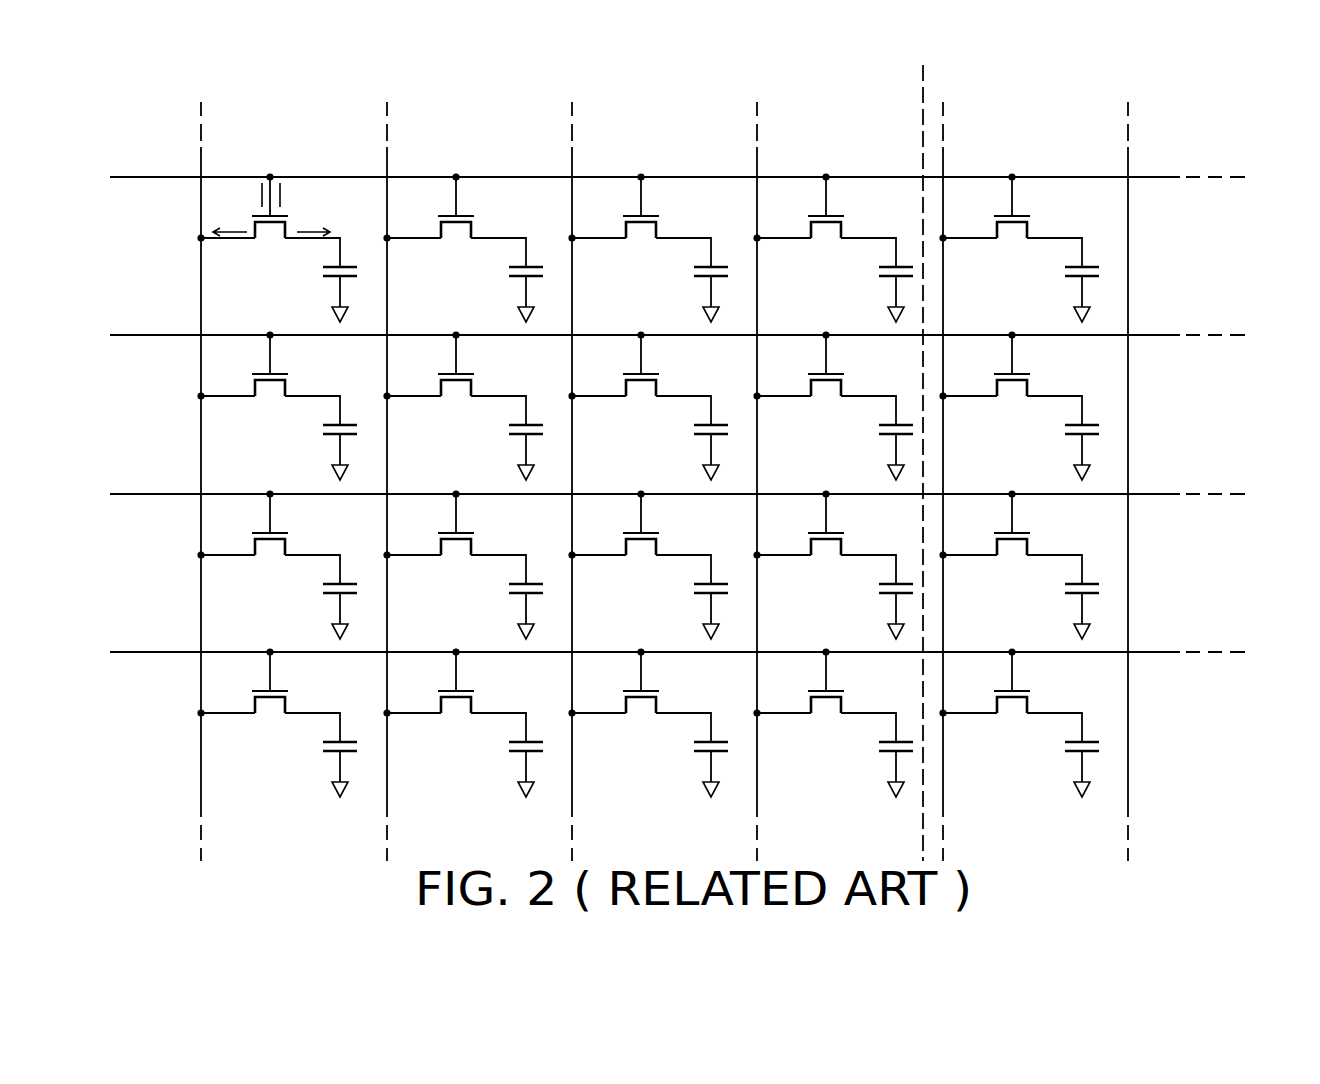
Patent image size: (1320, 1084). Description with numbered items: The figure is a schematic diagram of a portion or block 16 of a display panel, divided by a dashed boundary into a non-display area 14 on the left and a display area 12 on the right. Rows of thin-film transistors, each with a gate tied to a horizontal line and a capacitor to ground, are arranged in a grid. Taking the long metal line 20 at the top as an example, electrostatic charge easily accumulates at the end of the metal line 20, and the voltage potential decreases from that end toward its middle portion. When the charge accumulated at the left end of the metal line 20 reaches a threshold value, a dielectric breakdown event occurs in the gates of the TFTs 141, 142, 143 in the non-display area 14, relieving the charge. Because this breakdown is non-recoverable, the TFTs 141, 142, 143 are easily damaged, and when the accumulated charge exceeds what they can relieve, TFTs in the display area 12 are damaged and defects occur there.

The display area 12 is at (923, 87).
The non-display area 14 is at (923, 108).
The block 16 is at (1267, 165).
The metal line 20 is at (140, 176).
The TFT 141 is at (270, 248).
The TFT 142 is at (456, 248).
The TFT 143 is at (641, 248).